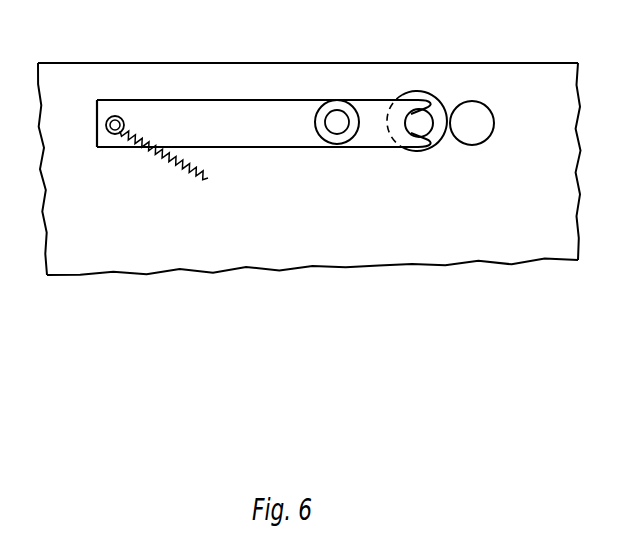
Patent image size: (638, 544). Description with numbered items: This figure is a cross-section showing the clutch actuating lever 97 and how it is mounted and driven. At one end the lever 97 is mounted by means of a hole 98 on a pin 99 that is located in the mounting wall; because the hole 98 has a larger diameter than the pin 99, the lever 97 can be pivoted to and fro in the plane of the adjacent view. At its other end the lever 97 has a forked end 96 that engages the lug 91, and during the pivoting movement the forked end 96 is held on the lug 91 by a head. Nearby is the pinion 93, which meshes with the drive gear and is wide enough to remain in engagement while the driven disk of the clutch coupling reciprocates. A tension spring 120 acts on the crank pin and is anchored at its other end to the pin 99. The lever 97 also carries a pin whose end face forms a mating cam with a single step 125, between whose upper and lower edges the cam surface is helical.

The lug 91 is at (428, 130).
The pinion 93 is at (485, 118).
The forked end 96 is at (406, 146).
The clutch actuating lever 97 is at (272, 137).
The hole 98 is at (119, 133).
The pin 99 is at (117, 117).
The tension spring 120 is at (205, 179).
The step 125 is at (334, 104).